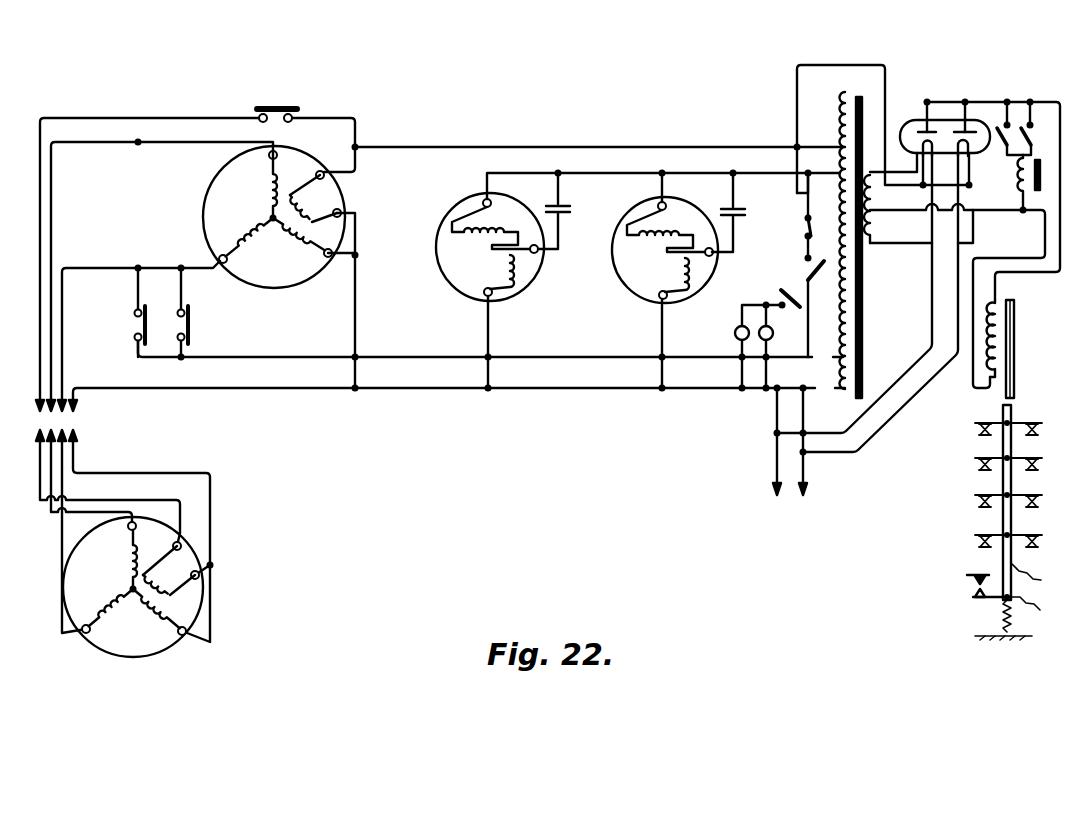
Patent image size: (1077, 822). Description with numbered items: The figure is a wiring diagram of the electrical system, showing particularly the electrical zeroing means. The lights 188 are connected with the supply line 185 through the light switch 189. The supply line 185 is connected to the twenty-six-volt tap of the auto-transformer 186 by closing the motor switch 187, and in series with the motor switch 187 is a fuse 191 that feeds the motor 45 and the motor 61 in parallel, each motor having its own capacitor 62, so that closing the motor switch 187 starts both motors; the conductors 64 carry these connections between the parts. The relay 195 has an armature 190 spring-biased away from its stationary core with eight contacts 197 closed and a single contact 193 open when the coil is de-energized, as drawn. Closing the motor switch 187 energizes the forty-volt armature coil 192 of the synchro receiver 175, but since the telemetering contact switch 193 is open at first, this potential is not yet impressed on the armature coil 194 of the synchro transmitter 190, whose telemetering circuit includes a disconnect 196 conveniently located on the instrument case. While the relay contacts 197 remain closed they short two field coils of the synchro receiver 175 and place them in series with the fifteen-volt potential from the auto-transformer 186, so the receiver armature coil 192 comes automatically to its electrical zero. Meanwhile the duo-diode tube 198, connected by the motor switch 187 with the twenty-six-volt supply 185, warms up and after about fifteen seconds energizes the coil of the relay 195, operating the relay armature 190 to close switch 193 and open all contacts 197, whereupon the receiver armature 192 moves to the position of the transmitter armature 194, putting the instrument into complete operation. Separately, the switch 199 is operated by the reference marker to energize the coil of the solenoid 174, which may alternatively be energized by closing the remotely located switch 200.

The motor 45 is at (642, 308).
The motor 61 is at (455, 215).
The capacitor 62 is at (566, 211).
The conductor 64 is at (365, 125).
The solenoid 174 is at (1019, 181).
The synchro-receiver 175 is at (226, 113).
The supply line 185 is at (790, 502).
The auto-transformer 186 is at (857, 96).
The motor switch 187 is at (806, 269).
The lights 188 is at (737, 336).
The light switch 189 is at (781, 299).
The synchro transmitter 190 is at (217, 590).
The fuse 191 is at (805, 226).
The armature coil 192 is at (313, 205).
The relay switch 193 is at (268, 106).
The armature coil 194 is at (165, 575).
The relay 195 is at (1018, 321).
The disconnect 196 is at (78, 413).
The relay contacts 197 is at (130, 327).
The duo-diode tube 198 is at (912, 120).
The switch 199 is at (876, 236).
The switch 200 is at (999, 104).